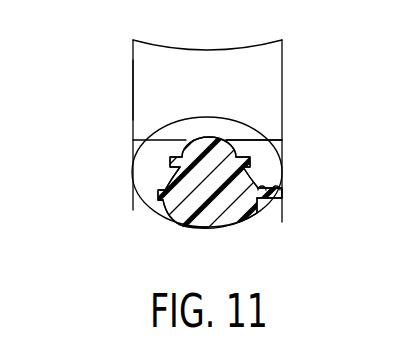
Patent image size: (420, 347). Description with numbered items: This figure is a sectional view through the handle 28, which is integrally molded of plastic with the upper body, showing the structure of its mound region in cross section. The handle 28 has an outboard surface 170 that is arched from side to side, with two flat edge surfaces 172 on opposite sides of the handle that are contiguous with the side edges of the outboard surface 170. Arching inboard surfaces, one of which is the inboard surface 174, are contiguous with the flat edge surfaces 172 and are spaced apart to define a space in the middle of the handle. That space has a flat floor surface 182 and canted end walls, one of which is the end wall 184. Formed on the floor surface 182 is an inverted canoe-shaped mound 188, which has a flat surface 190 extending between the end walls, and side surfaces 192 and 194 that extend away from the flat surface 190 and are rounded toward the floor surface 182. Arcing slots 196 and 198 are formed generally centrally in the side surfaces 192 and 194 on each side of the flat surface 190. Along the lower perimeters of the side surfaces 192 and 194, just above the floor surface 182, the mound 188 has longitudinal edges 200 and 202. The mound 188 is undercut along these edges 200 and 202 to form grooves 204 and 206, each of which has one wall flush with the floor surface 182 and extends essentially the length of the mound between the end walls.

The handle 28 is at (133, 88).
The outboard surface 170 is at (208, 227).
The flat edge surfaces 172 is at (133, 50).
The inboard surface 174 is at (193, 53).
The floor surface 182 is at (150, 206).
The end wall 184 is at (150, 126).
The mound 188 is at (236, 140).
The flat surface 190 is at (207, 136).
The side surface 192 is at (165, 178).
The side surface 194 is at (262, 180).
The arcing slot 196 is at (170, 160).
The arcing slot 198 is at (253, 160).
The longitudinal edge 200 is at (160, 190).
The longitudinal edge 202 is at (268, 189).
The groove 204 is at (181, 228).
The groove 206 is at (262, 220).